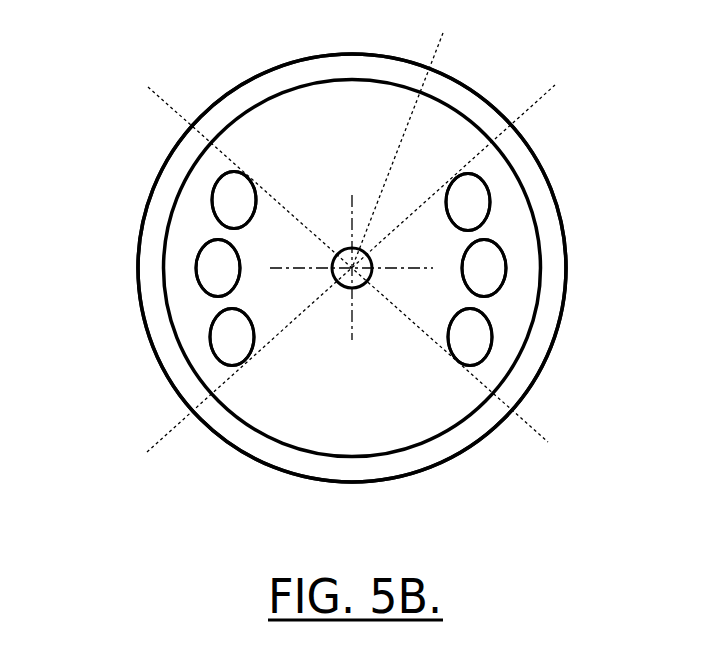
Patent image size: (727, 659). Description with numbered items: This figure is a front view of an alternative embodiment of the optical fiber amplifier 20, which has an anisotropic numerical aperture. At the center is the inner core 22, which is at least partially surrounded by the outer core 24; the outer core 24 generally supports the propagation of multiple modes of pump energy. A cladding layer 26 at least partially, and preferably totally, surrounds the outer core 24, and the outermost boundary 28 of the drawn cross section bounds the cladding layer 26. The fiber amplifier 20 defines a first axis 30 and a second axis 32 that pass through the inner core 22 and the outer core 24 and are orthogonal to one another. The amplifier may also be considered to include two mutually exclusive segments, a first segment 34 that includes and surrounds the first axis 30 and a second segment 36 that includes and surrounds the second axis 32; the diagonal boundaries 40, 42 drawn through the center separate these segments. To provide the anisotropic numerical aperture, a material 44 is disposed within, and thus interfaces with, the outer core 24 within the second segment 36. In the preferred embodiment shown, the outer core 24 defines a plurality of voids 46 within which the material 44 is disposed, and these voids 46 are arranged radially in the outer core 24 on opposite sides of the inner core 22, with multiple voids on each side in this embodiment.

The fiber amplifier 20 is at (362, 261).
The inner core 22 is at (431, 390).
The outer core 24 is at (371, 474).
The cladding layer 26 is at (352, 283).
The inner ring 28 is at (538, 157).
The first axis 30 is at (447, 33).
The second axis 32 is at (241, 240).
The first segment 34 is at (366, 152).
The second segment 36 is at (277, 307).
The diagonal axis 40 is at (178, 422).
The diagonal axis 42 is at (158, 93).
The material 44 is at (247, 211).
The voids 46 is at (352, 259).